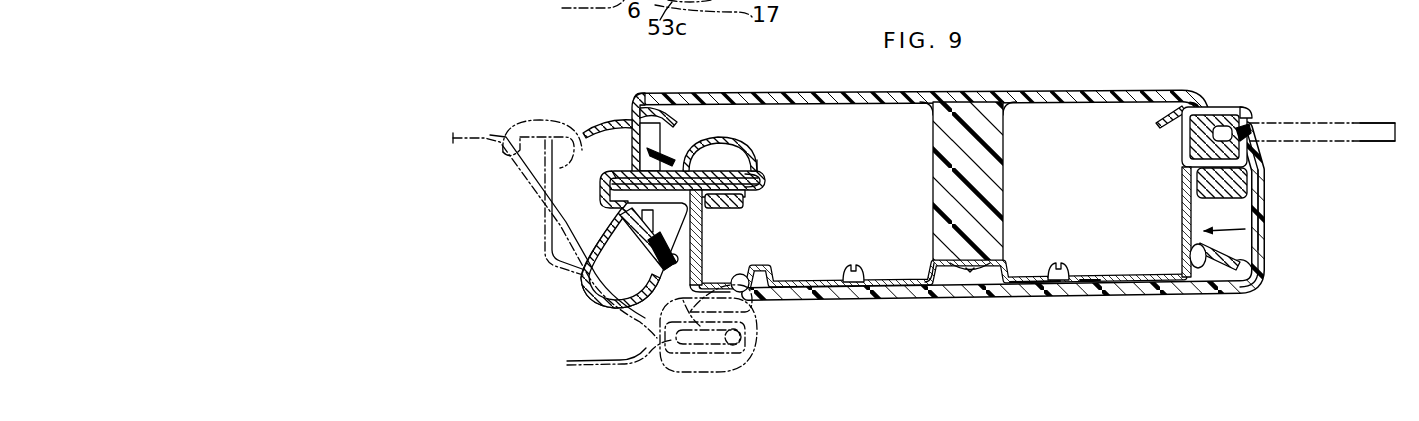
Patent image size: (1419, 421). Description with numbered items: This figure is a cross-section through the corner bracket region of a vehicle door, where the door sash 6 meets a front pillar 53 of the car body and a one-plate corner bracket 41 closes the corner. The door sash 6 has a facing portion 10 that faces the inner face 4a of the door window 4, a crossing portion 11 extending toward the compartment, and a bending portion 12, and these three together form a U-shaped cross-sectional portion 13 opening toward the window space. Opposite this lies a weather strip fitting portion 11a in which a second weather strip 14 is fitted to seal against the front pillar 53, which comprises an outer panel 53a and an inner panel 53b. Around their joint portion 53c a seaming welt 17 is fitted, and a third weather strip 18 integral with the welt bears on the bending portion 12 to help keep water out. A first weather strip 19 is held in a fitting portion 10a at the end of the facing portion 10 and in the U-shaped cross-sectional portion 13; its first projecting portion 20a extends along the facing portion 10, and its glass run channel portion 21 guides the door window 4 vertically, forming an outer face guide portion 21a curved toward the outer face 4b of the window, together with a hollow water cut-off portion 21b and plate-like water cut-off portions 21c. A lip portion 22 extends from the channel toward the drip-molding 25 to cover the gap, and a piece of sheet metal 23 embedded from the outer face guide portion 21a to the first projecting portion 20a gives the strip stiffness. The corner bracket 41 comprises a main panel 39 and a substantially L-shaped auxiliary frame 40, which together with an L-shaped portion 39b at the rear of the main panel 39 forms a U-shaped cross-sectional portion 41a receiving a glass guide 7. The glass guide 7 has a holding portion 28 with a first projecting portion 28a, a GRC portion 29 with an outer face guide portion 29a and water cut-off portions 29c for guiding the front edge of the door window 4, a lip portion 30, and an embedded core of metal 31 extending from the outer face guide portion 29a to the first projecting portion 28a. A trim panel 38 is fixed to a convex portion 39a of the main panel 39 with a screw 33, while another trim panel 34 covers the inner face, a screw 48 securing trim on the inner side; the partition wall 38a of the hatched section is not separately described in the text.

The door window 4 is at (1360, 121).
The inner face of the door window 4a is at (1372, 143).
The outer face of the door window 4b is at (1386, 121).
The door sash 6 is at (686, 279).
The glass guide 7 is at (1266, 162).
The facing portion 10 is at (737, 176).
The fitting portion 10a is at (600, 184).
The crossing portion 11 is at (703, 236).
The weather strip fitting portion 11a is at (640, 270).
The bending portion 12 is at (748, 310).
The U-shaped cross-sectional portion 13 is at (727, 200).
The second weather strip 14 is at (582, 292).
The seaming welt 17 is at (752, 362).
The third weather strip 18 is at (762, 301).
The first weather strip 19 is at (770, 182).
The first projecting portion 20a is at (752, 194).
The glass run channel portion 21 is at (631, 112).
The outer face guide portion 21a is at (660, 112).
The hollow and ridgy water cut-off portion 21b is at (722, 140).
The projecting plate-like water cut-off portions 21c is at (678, 152).
The lip portion 22 is at (590, 133).
The sheet metal 23 is at (754, 164).
The drip-molding 25 is at (518, 126).
The holding portion 28 is at (1266, 223).
The first projecting portion 28a is at (1256, 205).
The GRC portion 29 is at (1220, 108).
The outer face guide portion 29a is at (1247, 110).
The water cut-off portions 29c is at (1246, 143).
The lip portion 30 is at (1158, 126).
The core of metal 31 is at (1190, 105).
The screw 33 is at (975, 279).
The trim panel 34 is at (1040, 293).
The trim panel 38 is at (1020, 94).
The partition wall 38a is at (1000, 165).
The main panel 39 is at (1130, 275).
The convex portion 39a is at (922, 290).
The L-shaped portion 39b is at (1180, 225).
The auxiliary frame 40 is at (1200, 268).
The corner bracket 41 is at (1090, 271).
The U-shaped cross-sectional portion 41a is at (1234, 251).
The screw 48 is at (860, 270).
The front pillar 53 is at (470, 130).
The outer panel 53a is at (545, 264).
The inner panel 53b is at (570, 364).
The joint portion 53c is at (667, 350).